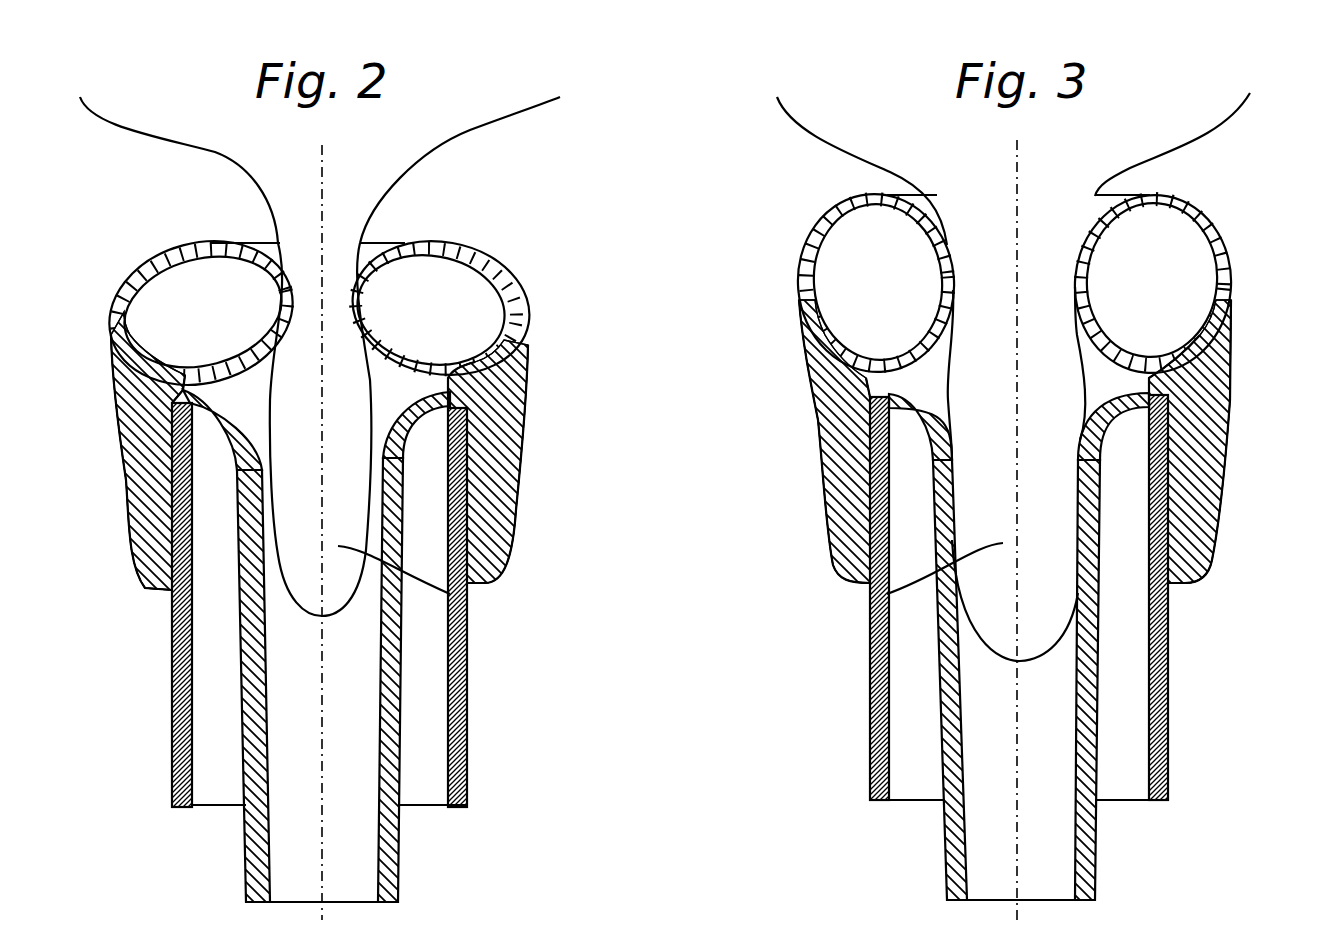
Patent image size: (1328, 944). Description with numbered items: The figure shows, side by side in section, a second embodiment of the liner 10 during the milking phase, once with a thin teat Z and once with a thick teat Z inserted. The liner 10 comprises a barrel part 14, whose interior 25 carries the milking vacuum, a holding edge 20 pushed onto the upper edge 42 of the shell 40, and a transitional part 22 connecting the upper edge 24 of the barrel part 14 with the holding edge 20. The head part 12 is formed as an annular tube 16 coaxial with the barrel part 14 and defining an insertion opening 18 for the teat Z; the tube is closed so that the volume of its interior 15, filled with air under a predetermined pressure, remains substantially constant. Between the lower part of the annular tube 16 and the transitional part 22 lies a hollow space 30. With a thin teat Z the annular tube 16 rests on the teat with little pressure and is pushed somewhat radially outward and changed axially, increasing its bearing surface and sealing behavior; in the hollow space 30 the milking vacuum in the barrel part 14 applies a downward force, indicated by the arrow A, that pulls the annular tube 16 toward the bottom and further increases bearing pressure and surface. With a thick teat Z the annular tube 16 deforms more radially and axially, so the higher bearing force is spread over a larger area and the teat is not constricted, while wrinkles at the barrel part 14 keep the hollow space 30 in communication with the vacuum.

In FIG. 2, the liner 10 is at (498, 258).
In FIG. 3, the liner 10 is at (818, 226).
In FIG. 2, the head part 12 is at (517, 353).
In FIG. 3, the head part 12 is at (810, 353).
In FIG. 2, the barrel part 14 is at (400, 668).
In FIG. 3, the barrel part 14 is at (947, 667).
In FIG. 2, the interior 15 is at (448, 318).
In FIG. 3, the interior 15 is at (887, 318).
In FIG. 2, the annular tube 16 is at (503, 283).
In FIG. 3, the annular tube 16 is at (800, 283).
In FIG. 2, the insertion opening 18 is at (362, 243).
In FIG. 3, the insertion opening 18 is at (915, 197).
In FIG. 2, the holding edge 20 is at (492, 527).
In FIG. 3, the holding edge 20 is at (850, 529).
In FIG. 2, the transitional part 22 is at (453, 388).
In FIG. 3, the transitional part 22 is at (830, 388).
In FIG. 2, the upper edge 24 is at (405, 460).
In FIG. 3, the upper edge 24 is at (950, 460).
In FIG. 2, the interior 25 is at (340, 808).
In FIG. 3, the interior 25 is at (1010, 807).
In FIG. 2, the hollow space 30 is at (378, 402).
In FIG. 3, the hollow space 30 is at (1113, 377).
In FIG. 2, the shell 40 is at (467, 734).
In FIG. 3, the shell 40 is at (870, 734).
In FIG. 2, the upper edge 42 is at (513, 424).
In FIG. 3, the upper edge 42 is at (817, 424).
In FIG. 2, the teat Z is at (468, 599).
In FIG. 3, the teat Z is at (885, 599).
In FIG. 2, the arrow A is at (240, 357).